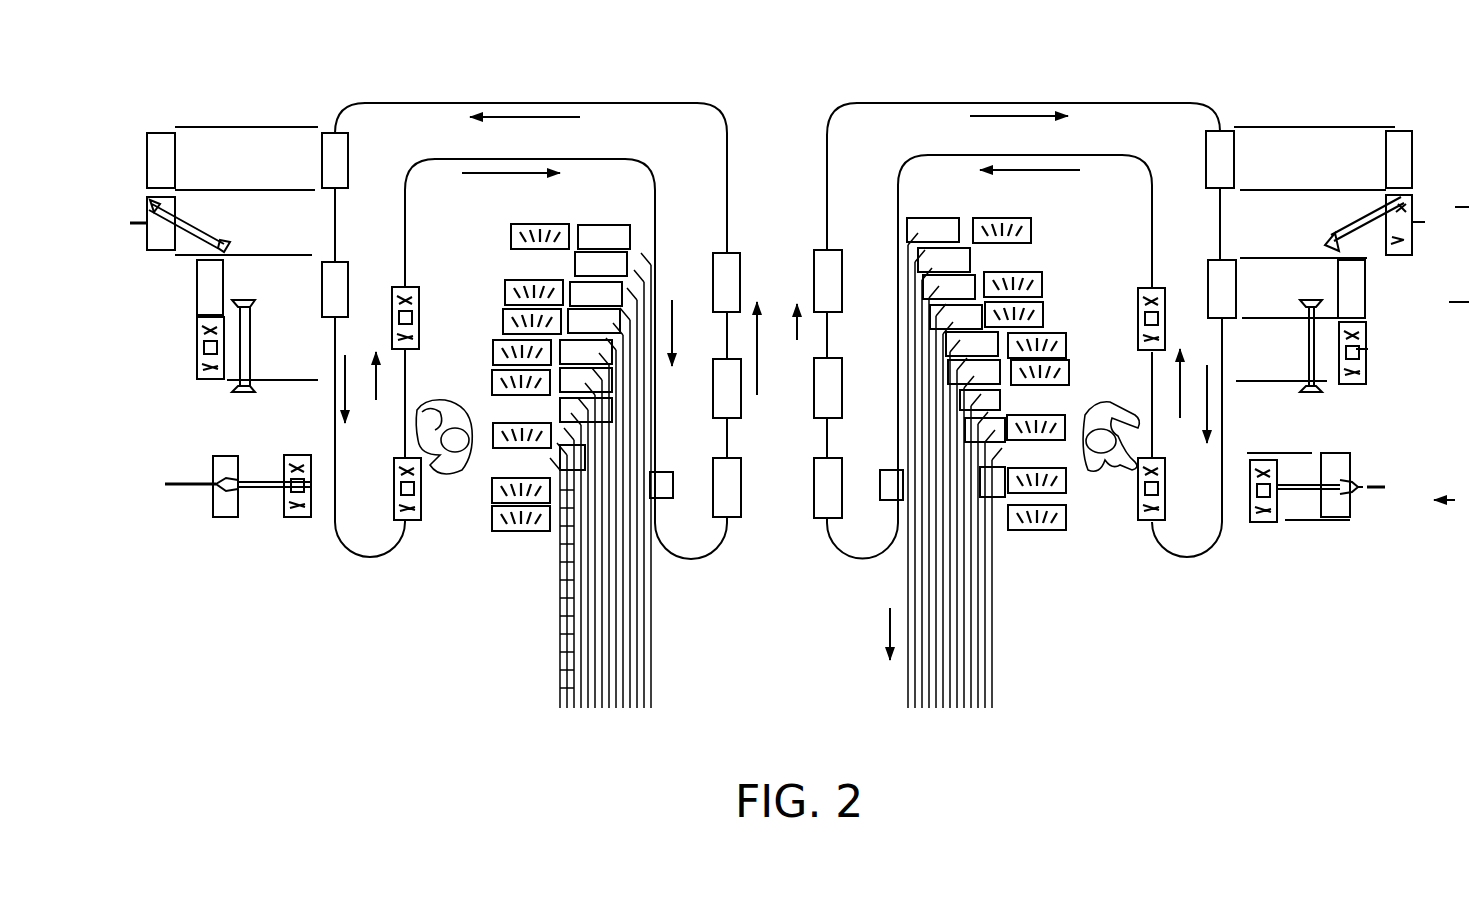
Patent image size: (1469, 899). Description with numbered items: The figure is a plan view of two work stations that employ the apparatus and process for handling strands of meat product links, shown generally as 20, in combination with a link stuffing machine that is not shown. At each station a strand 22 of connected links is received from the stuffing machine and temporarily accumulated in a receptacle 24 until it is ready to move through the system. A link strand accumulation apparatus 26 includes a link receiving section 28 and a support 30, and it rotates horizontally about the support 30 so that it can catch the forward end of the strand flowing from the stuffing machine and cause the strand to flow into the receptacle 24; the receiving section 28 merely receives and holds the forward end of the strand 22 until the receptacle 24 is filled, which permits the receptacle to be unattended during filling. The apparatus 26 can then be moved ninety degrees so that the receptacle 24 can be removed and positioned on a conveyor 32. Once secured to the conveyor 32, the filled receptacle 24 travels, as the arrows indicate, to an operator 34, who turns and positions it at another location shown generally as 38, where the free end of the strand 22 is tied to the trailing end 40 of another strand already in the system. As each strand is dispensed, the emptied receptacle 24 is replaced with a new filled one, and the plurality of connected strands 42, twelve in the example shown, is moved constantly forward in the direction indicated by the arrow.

The apparatus and process for handling strands of meat product links 20 is at (1089, 90).
The strand 22 is at (1423, 222).
The receptacle 24 is at (1413, 250).
The link strand accumulation apparatus 26 is at (1350, 220).
The link receiving section 28 is at (1346, 242).
The support 30 is at (1310, 352).
The conveyor 32 is at (1200, 560).
The operator 34 is at (1105, 480).
The location 38 is at (1028, 552).
The trailing end 40 is at (940, 295).
The feed tracks 42 is at (922, 712).